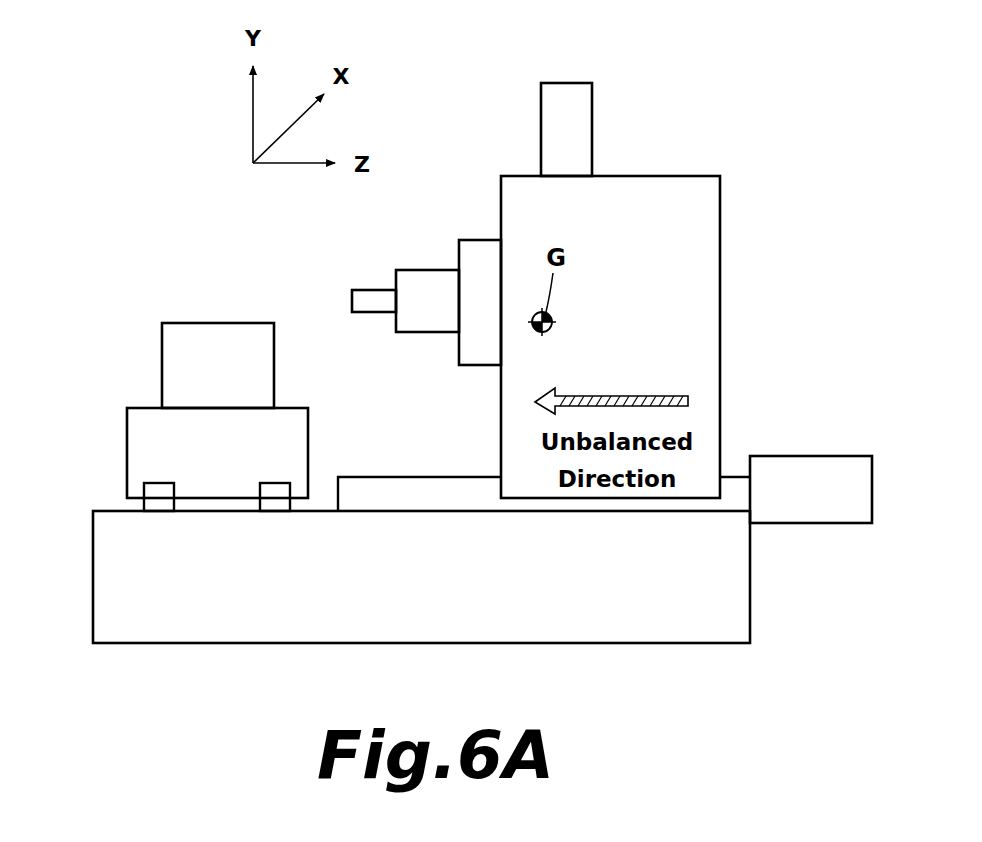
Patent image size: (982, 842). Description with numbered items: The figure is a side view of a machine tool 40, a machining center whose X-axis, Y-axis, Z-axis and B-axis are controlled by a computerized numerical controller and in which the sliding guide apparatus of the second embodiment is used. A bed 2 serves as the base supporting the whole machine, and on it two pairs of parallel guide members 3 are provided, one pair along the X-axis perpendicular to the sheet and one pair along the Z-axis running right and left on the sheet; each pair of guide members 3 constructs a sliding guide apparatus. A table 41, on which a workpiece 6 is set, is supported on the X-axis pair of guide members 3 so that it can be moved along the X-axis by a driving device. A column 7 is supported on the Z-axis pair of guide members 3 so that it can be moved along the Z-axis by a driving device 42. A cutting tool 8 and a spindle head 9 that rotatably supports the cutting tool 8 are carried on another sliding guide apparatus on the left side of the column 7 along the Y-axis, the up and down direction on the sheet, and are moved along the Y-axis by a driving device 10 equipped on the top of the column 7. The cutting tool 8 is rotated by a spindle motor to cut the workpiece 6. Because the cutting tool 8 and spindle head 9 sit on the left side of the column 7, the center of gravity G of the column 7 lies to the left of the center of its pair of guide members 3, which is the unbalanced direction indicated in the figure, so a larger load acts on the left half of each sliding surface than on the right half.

The bed 2 is at (656, 634).
The guide members 3 is at (155, 503).
The workpiece 6 is at (162, 350).
The column 7 is at (683, 176).
The cutting tool 8 is at (367, 313).
The spindle head 9 is at (473, 240).
The driving device 10 is at (578, 83).
The machine tool 40 is at (215, 240).
The table 41 is at (127, 437).
The driving device 42 is at (834, 456).